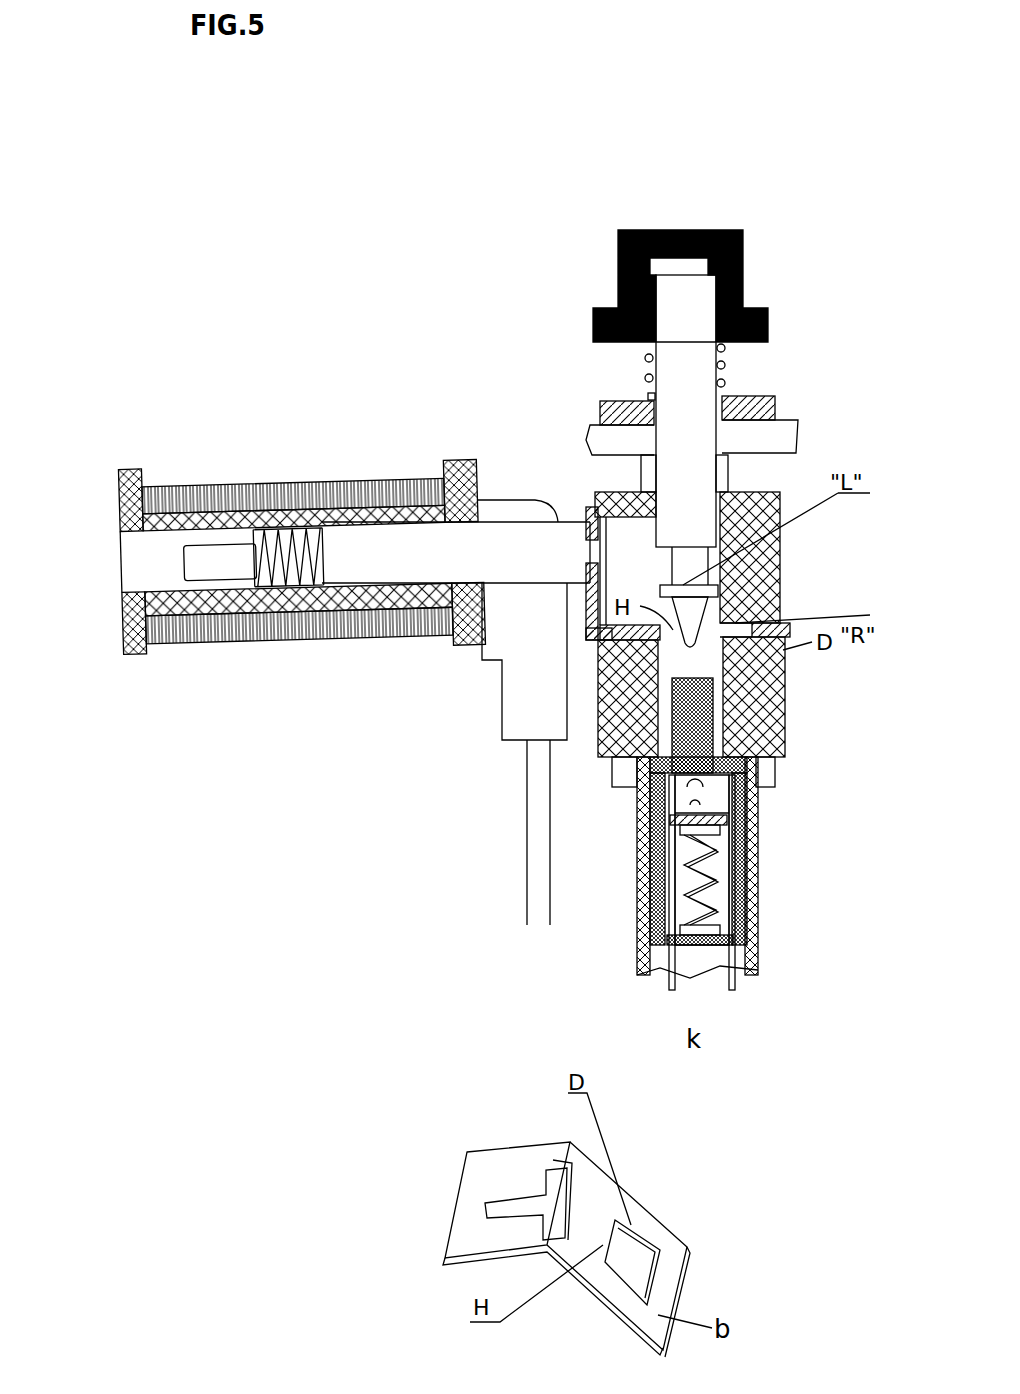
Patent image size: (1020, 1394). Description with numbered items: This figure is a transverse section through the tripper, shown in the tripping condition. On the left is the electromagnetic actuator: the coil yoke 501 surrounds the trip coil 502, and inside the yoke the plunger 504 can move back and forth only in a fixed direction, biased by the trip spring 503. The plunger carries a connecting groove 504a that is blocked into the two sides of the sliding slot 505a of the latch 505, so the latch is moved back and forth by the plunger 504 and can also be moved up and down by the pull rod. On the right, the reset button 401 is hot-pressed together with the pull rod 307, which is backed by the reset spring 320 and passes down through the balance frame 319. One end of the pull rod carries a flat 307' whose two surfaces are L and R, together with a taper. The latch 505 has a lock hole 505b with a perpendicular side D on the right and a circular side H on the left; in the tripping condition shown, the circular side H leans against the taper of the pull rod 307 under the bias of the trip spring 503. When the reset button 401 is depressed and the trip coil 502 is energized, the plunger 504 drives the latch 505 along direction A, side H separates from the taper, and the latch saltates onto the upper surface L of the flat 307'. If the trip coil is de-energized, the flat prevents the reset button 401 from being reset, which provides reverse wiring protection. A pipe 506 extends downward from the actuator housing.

The reset button 401 is at (710, 230).
The pull rod 307 is at (747, 405).
The reset spring 320 is at (648, 378).
The flat 307' is at (770, 582).
The balance frame 319 is at (772, 715).
The latch 505 is at (783, 660).
The sliding slot 505a is at (467, 1182).
The lock hole 505b is at (683, 1267).
The coil yoke 501 is at (123, 643).
The trip coil 502 is at (323, 633).
The trip spring 503 is at (257, 520).
The plunger 504 is at (458, 545).
The connecting groove 504a is at (590, 560).
The pipe 506 is at (527, 853).